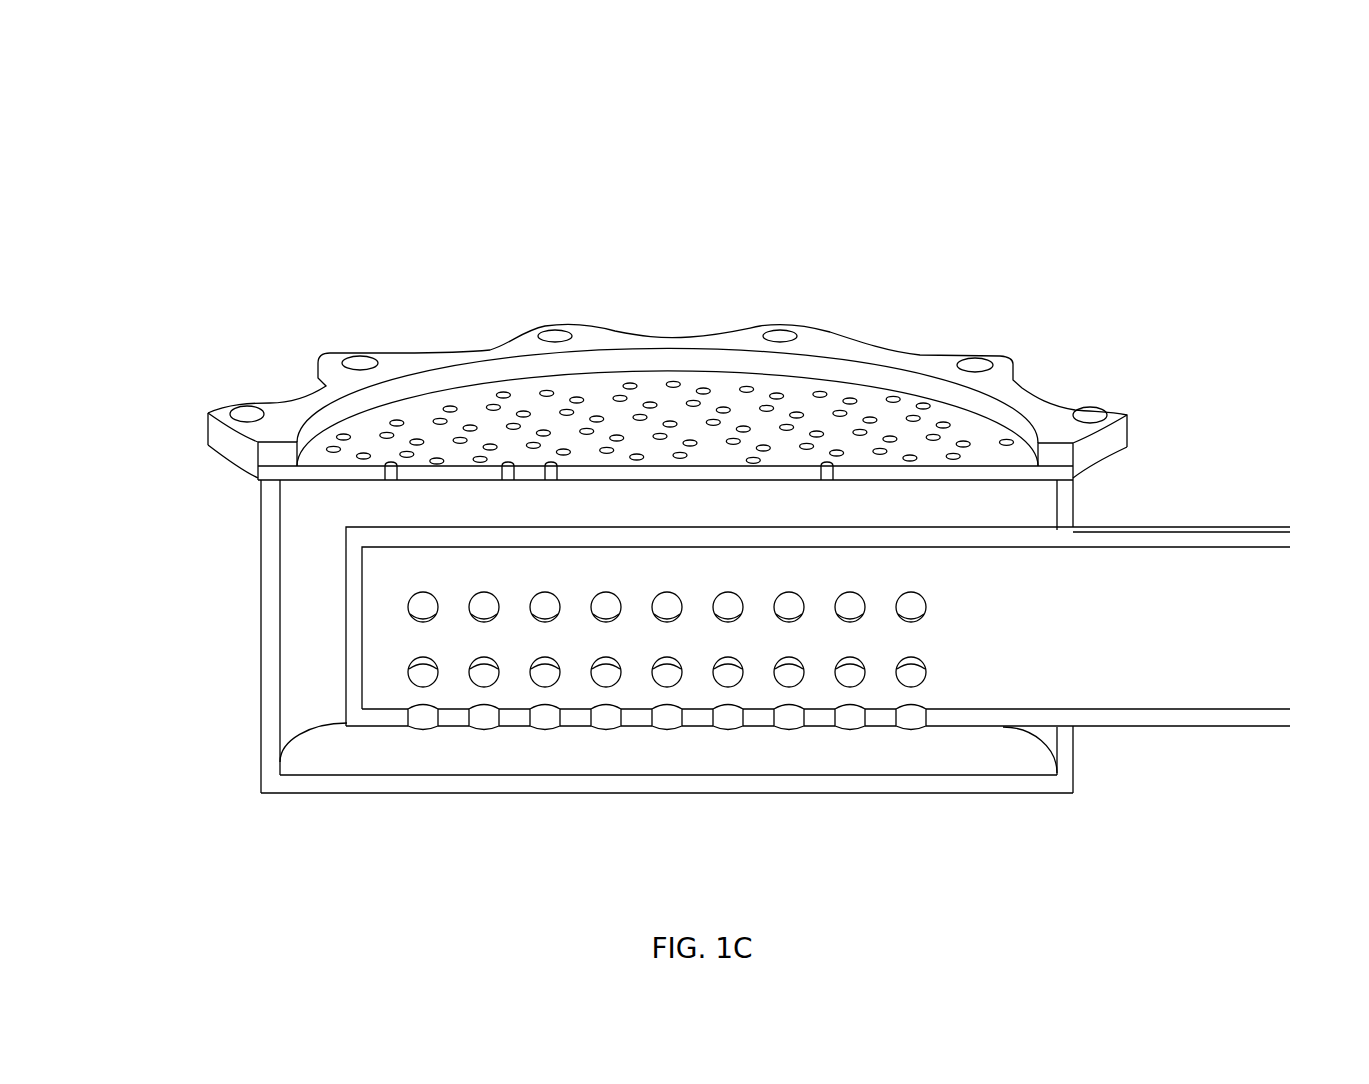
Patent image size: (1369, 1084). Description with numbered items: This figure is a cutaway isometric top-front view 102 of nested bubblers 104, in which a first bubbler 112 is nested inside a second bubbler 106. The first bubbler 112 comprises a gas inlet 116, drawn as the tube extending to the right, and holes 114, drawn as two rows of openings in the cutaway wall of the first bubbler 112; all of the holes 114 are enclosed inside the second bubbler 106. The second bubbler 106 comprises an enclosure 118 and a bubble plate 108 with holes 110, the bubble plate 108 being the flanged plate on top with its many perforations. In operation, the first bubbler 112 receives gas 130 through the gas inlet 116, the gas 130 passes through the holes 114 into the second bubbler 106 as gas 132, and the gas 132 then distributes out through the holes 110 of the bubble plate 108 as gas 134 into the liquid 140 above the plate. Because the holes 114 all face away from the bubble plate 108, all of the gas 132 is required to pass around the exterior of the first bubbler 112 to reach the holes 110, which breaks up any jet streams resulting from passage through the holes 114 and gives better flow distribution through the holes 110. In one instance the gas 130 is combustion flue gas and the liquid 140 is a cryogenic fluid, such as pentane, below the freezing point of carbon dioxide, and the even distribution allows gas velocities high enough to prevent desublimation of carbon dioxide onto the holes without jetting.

The cutaway isometric top-front view 102 is at (146, 116).
The nested bubblers 104 is at (347, 352).
The second bubbler 106 is at (293, 548).
The bubble plate 108 is at (380, 417).
The holes 110 is at (460, 397).
The first bubbler 112 is at (355, 623).
The holes 114 is at (920, 595).
The gas inlet 116 is at (1227, 538).
The enclosure 118 is at (273, 781).
The gas 130 is at (1245, 633).
The gas 132 is at (306, 688).
The gas 134 is at (828, 500).
The liquid 140 is at (679, 192).